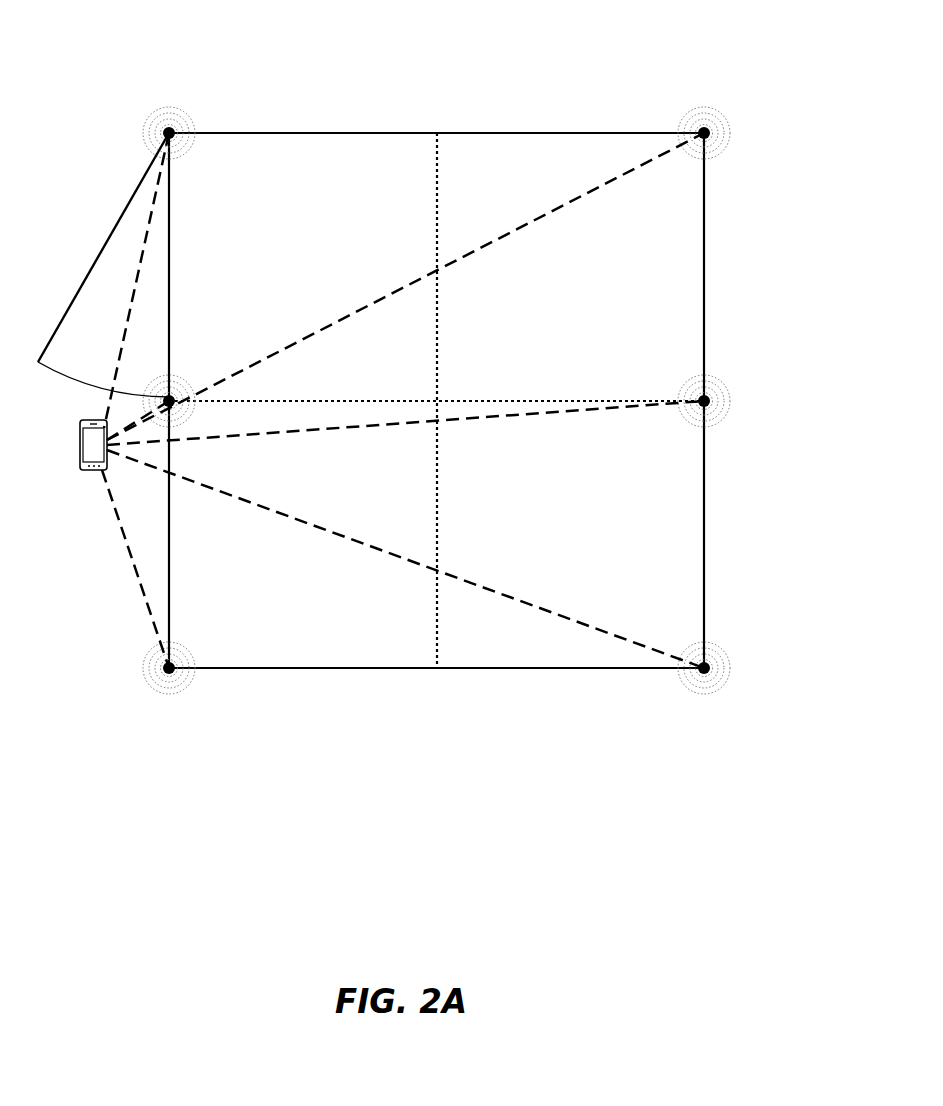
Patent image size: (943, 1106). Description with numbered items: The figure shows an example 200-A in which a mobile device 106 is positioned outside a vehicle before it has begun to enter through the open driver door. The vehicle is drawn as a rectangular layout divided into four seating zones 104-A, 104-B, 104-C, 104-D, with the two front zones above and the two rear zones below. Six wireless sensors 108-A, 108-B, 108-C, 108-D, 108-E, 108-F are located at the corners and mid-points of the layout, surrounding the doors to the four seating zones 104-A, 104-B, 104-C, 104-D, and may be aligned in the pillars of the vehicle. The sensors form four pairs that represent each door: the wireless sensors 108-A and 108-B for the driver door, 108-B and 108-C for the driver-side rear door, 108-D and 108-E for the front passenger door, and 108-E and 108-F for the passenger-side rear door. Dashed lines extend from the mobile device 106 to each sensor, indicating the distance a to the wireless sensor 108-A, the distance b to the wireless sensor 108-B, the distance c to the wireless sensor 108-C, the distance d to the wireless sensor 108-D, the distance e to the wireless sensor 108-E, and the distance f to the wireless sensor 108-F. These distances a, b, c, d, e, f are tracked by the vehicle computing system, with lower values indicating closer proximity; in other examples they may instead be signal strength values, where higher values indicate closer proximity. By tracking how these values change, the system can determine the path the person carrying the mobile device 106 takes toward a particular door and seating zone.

The example 200-A is at (126, 40).
The seating zone 104-A is at (279, 132).
The seating zone 104-B is at (583, 132).
The seating zone 104-C is at (279, 669).
The seating zone 104-D is at (583, 669).
The wireless sensor 108-A is at (165, 139).
The wireless sensor 108-B is at (172, 397).
The wireless sensor 108-C is at (165, 667).
The wireless sensor 108-D is at (708, 137).
The wireless sensor 108-E is at (708, 403).
The wireless sensor 108-F is at (708, 669).
The mobile device 106 is at (92, 474).
The distance a is at (124, 310).
The distance b is at (150, 390).
The distance c is at (104, 534).
The distance d is at (322, 320).
The distance e is at (330, 432).
The distance f is at (330, 540).